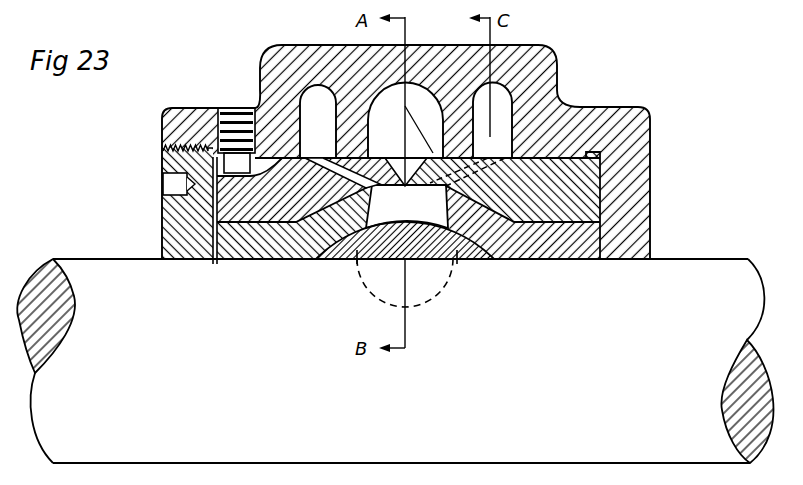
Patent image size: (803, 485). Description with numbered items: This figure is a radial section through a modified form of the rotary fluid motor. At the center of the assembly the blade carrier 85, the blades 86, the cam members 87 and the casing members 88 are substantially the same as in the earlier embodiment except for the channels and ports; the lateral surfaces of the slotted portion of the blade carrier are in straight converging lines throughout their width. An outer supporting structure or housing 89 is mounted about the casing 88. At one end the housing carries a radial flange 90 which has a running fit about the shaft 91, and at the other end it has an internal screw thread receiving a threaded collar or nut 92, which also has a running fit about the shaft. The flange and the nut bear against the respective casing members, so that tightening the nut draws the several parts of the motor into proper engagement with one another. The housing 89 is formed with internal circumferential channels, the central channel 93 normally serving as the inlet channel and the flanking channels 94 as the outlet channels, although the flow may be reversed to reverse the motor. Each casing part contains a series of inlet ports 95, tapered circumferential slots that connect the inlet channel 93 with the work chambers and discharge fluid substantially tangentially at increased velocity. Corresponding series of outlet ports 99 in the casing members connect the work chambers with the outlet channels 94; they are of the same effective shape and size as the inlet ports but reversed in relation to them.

The blade carrier 85 is at (392, 208).
The blades 86 is at (335, 258).
The cam members 87 is at (253, 254).
The casing members 88 is at (233, 207).
The housing 89 is at (553, 106).
The radial flange 90 is at (628, 222).
The shaft 91 is at (649, 449).
The threaded collar or nut 92 is at (172, 165).
The inlet channel 93 is at (419, 103).
The outlet channels 94 is at (317, 98).
The inlet ports 95 is at (419, 152).
The outlet ports 99 is at (332, 158).